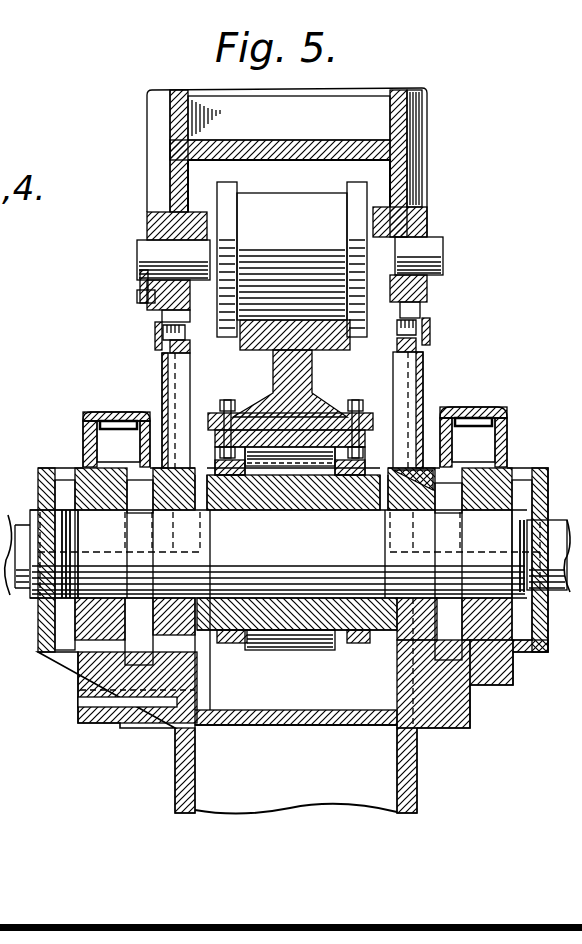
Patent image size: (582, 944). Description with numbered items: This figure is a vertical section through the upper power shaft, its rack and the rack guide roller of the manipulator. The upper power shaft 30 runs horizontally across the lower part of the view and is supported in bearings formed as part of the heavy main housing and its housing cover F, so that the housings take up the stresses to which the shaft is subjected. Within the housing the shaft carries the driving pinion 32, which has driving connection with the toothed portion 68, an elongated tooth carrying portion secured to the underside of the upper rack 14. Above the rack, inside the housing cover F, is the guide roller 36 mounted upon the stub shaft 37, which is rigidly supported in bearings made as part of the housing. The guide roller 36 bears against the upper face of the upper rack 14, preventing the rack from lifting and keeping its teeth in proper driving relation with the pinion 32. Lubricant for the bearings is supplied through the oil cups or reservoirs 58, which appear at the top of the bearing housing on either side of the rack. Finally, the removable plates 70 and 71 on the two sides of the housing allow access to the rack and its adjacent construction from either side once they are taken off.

The housing cover portion F is at (403, 130).
The upper rack bar 14 is at (305, 386).
The upper power shaft 30 is at (287, 554).
The pinion 32 is at (265, 480).
The guide roller 36 is at (292, 259).
The stub shaft 37 is at (430, 250).
The oil cup 58 is at (100, 442).
The tooth carrying portion 68 is at (302, 440).
The removable plate 70 is at (423, 354).
The removable plate 71 is at (160, 356).